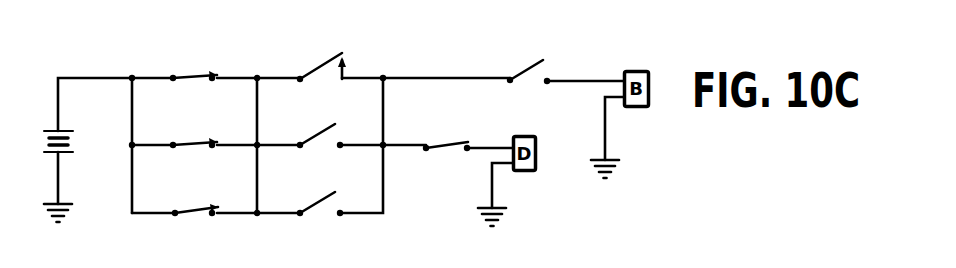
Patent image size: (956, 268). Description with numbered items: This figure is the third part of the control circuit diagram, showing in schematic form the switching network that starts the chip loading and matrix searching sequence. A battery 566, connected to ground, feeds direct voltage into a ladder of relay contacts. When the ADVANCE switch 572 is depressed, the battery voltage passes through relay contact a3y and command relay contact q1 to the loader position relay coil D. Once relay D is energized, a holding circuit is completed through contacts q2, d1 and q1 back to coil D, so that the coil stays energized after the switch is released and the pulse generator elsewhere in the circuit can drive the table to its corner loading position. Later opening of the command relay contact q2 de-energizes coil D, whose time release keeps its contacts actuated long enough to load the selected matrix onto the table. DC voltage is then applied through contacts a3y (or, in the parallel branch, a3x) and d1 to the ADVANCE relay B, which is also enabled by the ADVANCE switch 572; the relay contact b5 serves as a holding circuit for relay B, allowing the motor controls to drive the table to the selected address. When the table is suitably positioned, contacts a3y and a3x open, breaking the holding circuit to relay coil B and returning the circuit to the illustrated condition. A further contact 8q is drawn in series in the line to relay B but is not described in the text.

The battery 566 is at (73, 131).
The relay contact a3y is at (192, 74).
The relay contact a3x is at (202, 141).
The command relay contact q2 is at (190, 214).
The ADVANCE switch 572 is at (317, 67).
The relay contact b5 is at (320, 131).
The relay contact d1 is at (312, 209).
The command relay contact q1 is at (447, 145).
The switch contact 8q is at (526, 71).